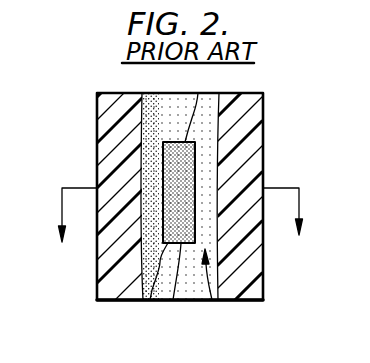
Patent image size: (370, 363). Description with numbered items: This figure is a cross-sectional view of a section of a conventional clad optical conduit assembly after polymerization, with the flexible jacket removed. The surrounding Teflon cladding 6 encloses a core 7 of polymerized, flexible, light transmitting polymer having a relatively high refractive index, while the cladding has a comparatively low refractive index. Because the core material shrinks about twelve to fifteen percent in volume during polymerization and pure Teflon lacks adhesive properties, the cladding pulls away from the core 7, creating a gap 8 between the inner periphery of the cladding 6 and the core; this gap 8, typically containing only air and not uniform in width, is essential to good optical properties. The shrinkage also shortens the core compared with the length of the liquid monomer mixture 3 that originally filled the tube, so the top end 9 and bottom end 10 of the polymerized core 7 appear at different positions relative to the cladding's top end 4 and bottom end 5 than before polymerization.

The liquid monomer mixture 3 is at (174, 227).
The top end 4 is at (101, 92).
The bottom end 5 is at (93, 299).
The Teflon cladding 6 is at (250, 108).
The core 7 is at (150, 300).
The gap 8 is at (212, 300).
The top end of polymerized core 9 is at (200, 91).
The bottom end of polymerized core 10 is at (173, 300).